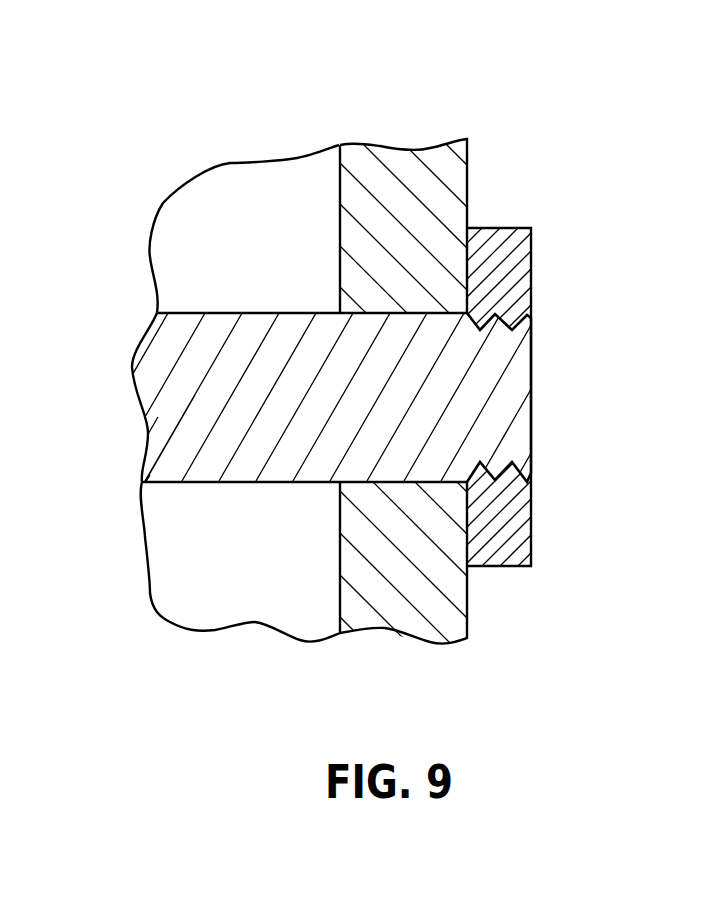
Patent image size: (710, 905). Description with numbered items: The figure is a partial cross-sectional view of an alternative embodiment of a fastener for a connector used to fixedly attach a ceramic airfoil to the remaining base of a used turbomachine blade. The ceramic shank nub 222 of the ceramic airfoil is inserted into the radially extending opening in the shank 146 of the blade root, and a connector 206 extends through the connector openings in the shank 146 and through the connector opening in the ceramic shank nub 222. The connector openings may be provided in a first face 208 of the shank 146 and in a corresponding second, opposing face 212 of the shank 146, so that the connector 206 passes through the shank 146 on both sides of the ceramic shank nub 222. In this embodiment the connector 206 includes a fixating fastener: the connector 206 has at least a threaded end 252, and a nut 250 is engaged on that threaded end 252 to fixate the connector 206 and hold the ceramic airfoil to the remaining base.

The shank 146 is at (352, 376).
The nut 250 is at (505, 248).
The threaded end 252 is at (512, 347).
The connector 206 is at (513, 387).
The ceramic shank nub 222 is at (263, 600).
The first face 208 is at (383, 426).
The second, opposing face 212 is at (412, 613).